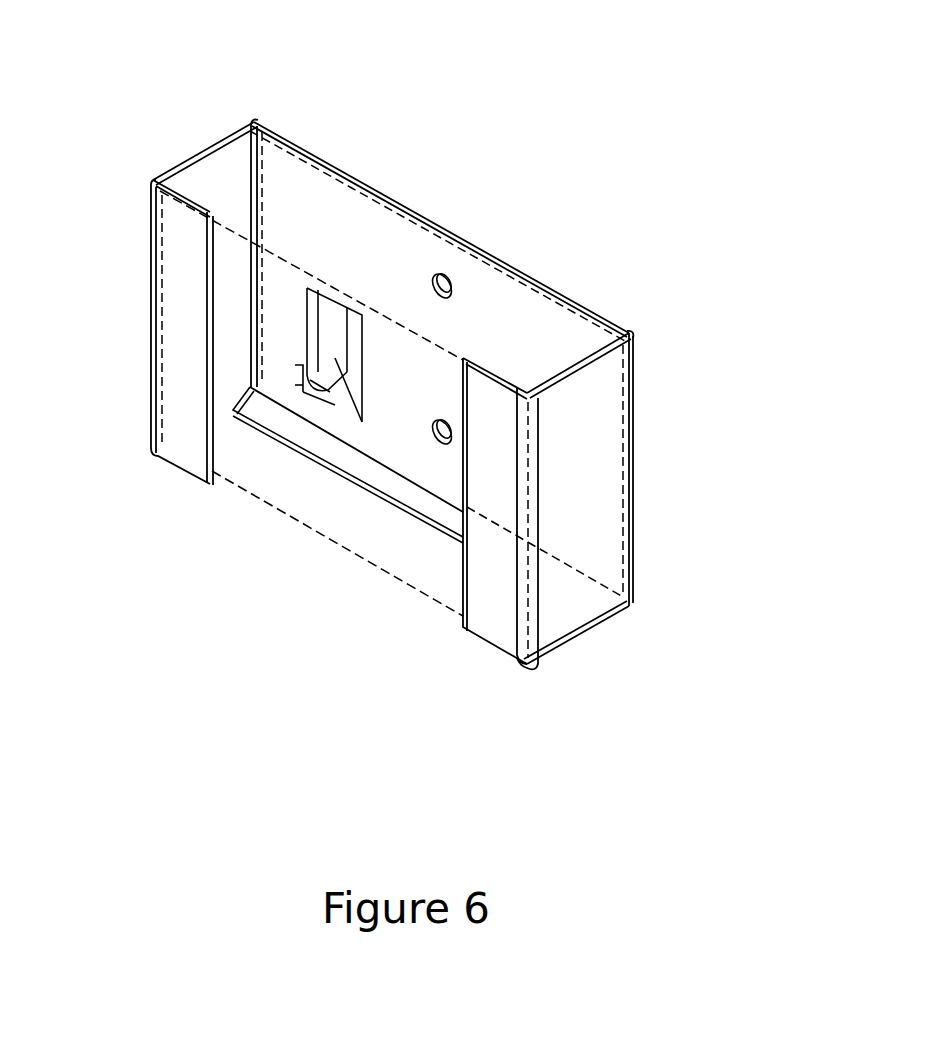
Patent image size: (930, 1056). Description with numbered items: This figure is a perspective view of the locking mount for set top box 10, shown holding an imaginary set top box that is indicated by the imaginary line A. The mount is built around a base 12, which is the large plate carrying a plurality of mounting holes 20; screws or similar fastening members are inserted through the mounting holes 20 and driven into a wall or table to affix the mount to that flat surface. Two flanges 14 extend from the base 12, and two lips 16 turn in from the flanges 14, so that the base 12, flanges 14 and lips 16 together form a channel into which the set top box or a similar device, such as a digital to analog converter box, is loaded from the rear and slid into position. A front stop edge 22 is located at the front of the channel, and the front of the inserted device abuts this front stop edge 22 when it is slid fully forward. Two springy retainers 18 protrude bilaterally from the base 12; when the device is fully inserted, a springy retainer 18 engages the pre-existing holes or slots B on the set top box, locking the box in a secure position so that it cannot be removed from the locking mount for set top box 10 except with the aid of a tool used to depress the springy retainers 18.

The locking mount for set top box 10 is at (427, 380).
The base 12 is at (529, 310).
The flange 14 is at (216, 170).
The lip 16 is at (175, 325).
The springy retainer 18 is at (327, 340).
The mounting hole 20 is at (442, 278).
The front stop edge 22 is at (302, 440).
The imaginary line A is at (300, 257).
The pre-existing holes or slots B is at (302, 397).